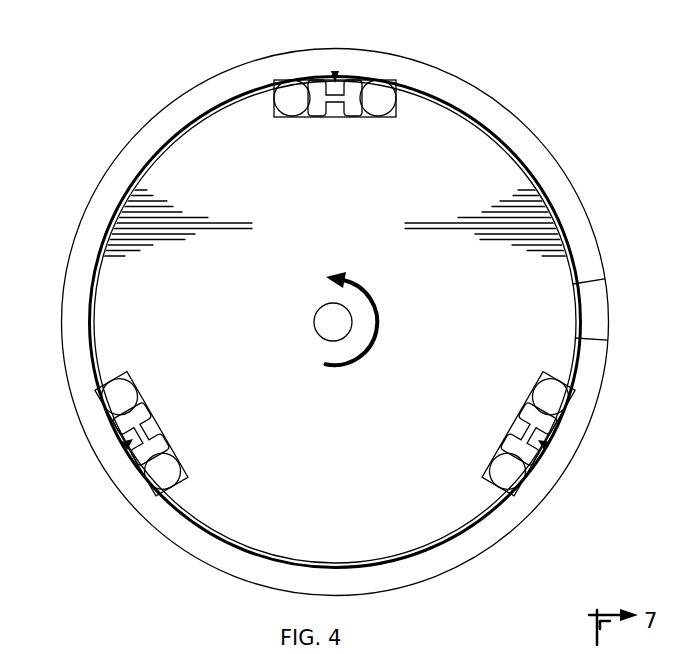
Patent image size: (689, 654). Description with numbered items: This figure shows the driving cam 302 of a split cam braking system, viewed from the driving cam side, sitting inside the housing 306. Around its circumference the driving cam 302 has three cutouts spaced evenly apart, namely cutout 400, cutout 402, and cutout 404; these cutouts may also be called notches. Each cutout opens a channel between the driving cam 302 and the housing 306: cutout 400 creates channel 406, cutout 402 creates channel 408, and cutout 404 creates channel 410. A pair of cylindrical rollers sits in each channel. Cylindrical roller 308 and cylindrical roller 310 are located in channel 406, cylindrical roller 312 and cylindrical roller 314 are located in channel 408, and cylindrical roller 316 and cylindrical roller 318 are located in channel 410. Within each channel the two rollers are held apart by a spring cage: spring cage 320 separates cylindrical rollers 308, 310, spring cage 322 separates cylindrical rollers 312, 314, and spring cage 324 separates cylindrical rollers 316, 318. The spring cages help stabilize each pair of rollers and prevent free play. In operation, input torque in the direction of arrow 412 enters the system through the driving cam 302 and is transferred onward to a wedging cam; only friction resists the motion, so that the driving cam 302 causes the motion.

The driving cam 302 is at (358, 503).
The housing 306 is at (465, 78).
The cylindrical roller 308 is at (290, 90).
The cylindrical roller 310 is at (378, 92).
The cylindrical roller 312 is at (538, 390).
The cylindrical roller 314 is at (510, 477).
The cylindrical roller 316 is at (143, 477).
The cylindrical roller 318 is at (127, 390).
The spring cage 320 is at (333, 114).
The spring cage 322 is at (517, 423).
The spring cage 324 is at (153, 422).
The cutout 400 is at (365, 117).
The cutout 402 is at (493, 475).
The cutout 404 is at (180, 473).
The channel 406 is at (335, 72).
The channel 408 is at (547, 446).
The channel 410 is at (124, 446).
The arrow 412 is at (378, 312).